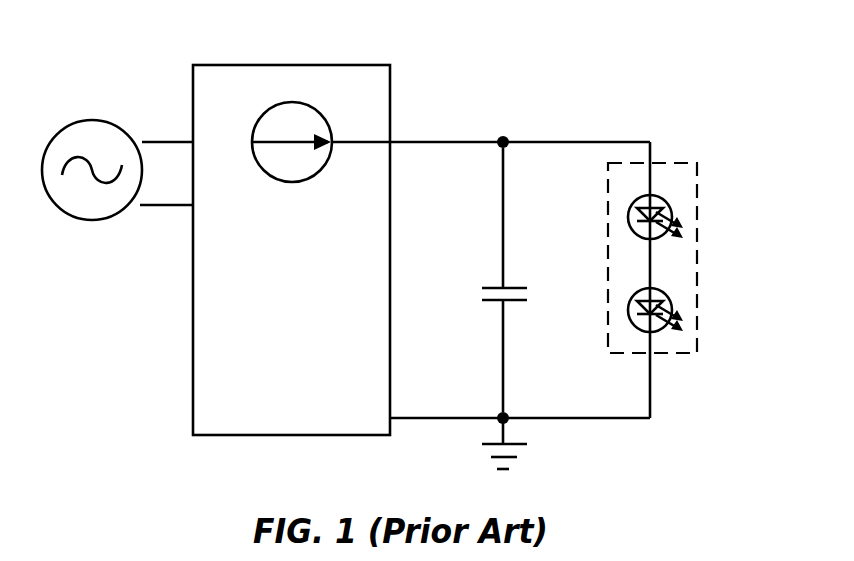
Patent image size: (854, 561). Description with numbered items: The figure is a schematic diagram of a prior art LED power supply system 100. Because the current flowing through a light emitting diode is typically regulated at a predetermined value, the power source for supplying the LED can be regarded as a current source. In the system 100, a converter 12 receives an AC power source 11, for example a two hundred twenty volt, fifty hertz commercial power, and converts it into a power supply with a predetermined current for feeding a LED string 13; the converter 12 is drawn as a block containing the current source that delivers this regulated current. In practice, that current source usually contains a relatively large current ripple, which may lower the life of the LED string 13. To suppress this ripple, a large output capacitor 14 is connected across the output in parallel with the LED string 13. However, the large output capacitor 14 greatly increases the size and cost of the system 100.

The AC power source 11 is at (86, 120).
The converter 12 is at (277, 65).
The LED string 13 is at (697, 163).
The output capacitor 14 is at (523, 286).
The LED power supply system 100 is at (684, 70).